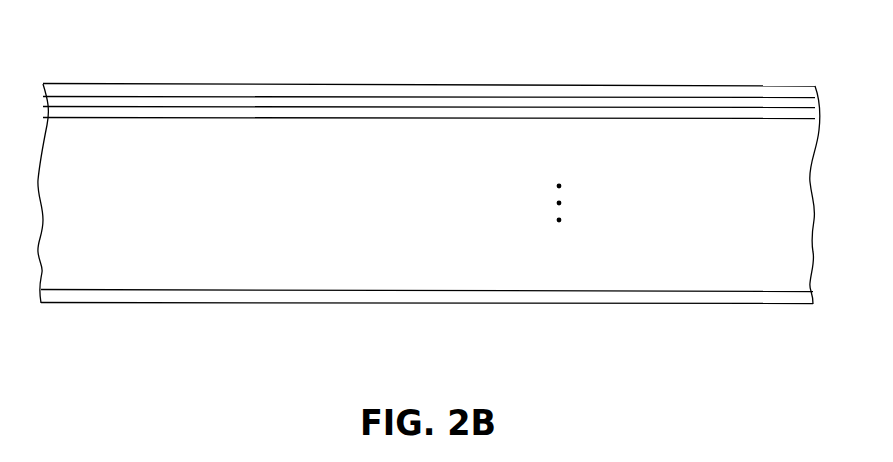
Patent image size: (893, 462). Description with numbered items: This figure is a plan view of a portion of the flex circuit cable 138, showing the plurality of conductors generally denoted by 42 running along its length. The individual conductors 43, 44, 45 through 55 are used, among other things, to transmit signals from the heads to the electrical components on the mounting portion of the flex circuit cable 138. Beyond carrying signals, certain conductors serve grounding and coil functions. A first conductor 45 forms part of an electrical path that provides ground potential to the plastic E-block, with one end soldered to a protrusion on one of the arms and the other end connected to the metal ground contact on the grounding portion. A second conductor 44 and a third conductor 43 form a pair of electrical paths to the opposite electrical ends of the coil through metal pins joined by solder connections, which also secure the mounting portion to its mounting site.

The plurality of conductors 42 is at (285, 97).
The third conductor 43 is at (407, 96).
The second conductor 44 is at (503, 107).
The first conductor 45 is at (605, 118).
The conductor 55 is at (643, 292).
The flex circuit cable 138 is at (255, 303).